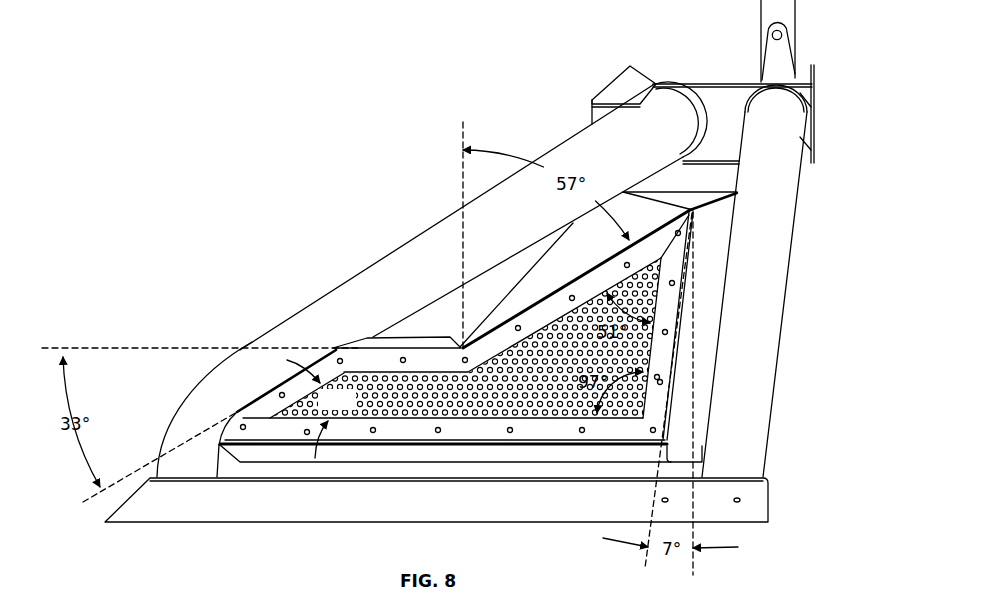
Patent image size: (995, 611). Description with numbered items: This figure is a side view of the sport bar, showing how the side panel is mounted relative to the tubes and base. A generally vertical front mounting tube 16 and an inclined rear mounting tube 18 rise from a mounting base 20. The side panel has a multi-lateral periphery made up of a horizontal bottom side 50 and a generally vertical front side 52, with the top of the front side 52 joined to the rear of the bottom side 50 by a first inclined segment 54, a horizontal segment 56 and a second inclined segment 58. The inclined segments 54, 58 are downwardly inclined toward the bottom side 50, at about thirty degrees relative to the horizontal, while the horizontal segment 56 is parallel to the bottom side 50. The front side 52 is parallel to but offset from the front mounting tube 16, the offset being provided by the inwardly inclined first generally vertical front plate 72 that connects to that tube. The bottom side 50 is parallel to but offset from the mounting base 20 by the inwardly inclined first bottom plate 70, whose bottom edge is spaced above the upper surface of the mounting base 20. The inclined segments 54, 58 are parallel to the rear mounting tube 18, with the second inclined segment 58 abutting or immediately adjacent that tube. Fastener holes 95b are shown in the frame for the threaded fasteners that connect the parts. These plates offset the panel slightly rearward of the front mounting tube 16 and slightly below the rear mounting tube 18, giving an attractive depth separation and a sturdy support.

The front mounting tube 16 is at (785, 188).
The rear mounting tube 18 is at (412, 258).
The mounting base 20 is at (772, 500).
The horizontal bottom side 50 is at (353, 427).
The generally vertical front side 52 is at (672, 267).
The first inclined segment 54 is at (551, 303).
The horizontal segment 56 is at (377, 360).
The second inclined segment 58 is at (293, 388).
The first bottom plate 70 is at (508, 453).
The first generally vertical front plate 72 is at (715, 237).
The fastener holes 95b is at (307, 434).